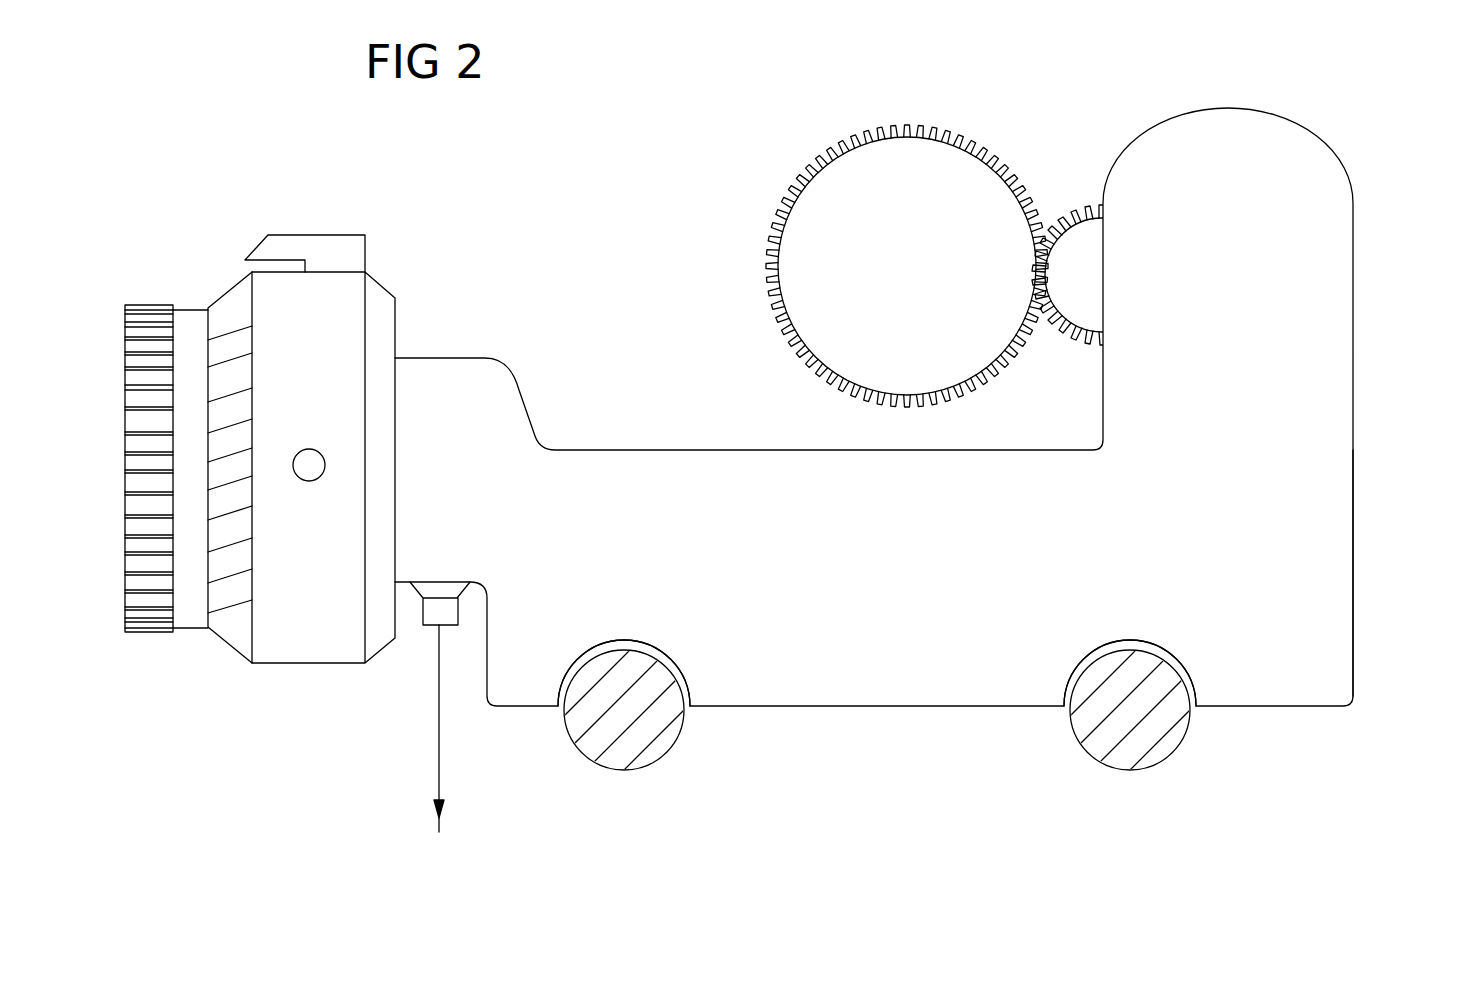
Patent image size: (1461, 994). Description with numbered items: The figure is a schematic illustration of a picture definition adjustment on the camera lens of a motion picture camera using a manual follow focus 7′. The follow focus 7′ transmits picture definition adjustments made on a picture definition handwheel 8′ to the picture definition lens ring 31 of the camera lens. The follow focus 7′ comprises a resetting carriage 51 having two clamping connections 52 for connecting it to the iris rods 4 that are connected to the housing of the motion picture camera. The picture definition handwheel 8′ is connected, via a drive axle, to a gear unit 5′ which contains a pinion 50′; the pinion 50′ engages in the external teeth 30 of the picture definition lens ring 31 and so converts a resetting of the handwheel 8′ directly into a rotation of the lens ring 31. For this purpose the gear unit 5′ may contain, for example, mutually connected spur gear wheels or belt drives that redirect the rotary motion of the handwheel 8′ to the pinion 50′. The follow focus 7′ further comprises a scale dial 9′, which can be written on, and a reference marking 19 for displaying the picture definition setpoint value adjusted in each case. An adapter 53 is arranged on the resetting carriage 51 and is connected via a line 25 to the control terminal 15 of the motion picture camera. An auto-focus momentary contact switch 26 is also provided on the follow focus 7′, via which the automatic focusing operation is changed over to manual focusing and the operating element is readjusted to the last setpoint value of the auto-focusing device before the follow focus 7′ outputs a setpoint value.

The manual follow focus 7′ is at (302, 712).
The picture definition handwheel 8′ is at (147, 613).
The scale dial 9′ is at (233, 620).
The reference marking 19 is at (322, 250).
The auto-focus momentary contact switch 26 is at (309, 462).
The line 25 is at (438, 712).
The control terminal 15 is at (443, 836).
The adapter 53 is at (435, 592).
The gear unit 5′ is at (1282, 353).
The resetting carriage 51 is at (1278, 565).
The external teeth 30 is at (805, 170).
The picture definition lens ring 31 is at (813, 257).
The pinion 50′ is at (1082, 260).
The clamping connections 52 is at (680, 677).
The iris rods 4 is at (620, 742).